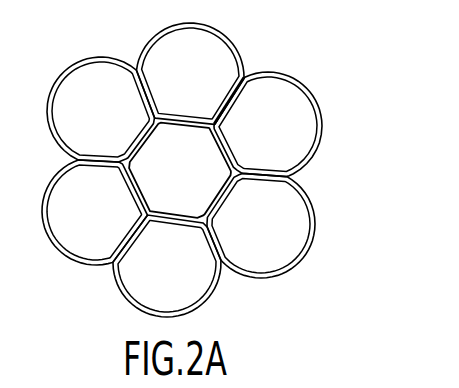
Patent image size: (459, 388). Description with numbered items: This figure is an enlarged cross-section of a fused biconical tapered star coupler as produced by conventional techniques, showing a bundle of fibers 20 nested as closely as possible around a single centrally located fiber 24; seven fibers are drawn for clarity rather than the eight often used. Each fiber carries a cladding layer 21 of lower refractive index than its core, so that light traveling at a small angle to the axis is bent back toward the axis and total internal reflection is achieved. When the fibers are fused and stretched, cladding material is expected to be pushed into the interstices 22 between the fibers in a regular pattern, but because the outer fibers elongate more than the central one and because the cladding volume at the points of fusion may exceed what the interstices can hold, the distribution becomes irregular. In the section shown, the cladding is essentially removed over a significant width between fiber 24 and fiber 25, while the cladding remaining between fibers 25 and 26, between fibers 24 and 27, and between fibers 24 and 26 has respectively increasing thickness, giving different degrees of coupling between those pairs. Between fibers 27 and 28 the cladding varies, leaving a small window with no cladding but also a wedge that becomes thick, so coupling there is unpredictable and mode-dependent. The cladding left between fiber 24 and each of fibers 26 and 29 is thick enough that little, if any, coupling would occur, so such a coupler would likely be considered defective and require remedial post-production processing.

The fibers 20 is at (288, 113).
The cladding layer 21 is at (288, 77).
The interstices 22 is at (242, 80).
The fiber 24 is at (164, 180).
The fiber 25 is at (83, 116).
The fiber 26 is at (171, 85).
The fiber 27 is at (76, 218).
The fiber 28 is at (149, 280).
The fiber 29 is at (247, 231).